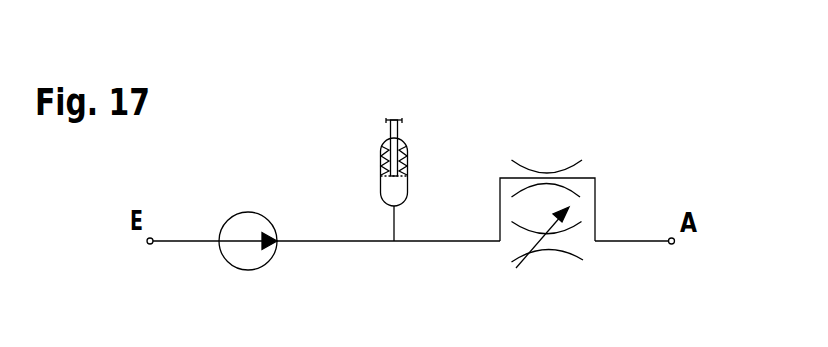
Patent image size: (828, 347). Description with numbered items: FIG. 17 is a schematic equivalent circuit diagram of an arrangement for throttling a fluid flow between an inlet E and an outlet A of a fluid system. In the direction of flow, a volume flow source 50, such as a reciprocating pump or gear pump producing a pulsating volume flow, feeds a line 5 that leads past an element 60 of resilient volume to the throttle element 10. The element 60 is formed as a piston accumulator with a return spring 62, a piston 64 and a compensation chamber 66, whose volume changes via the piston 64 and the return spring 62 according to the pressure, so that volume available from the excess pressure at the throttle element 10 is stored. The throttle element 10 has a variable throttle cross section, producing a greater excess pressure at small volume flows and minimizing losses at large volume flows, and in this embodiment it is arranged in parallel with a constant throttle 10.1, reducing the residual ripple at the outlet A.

The volume flow source 50 is at (227, 220).
The line 5 is at (296, 239).
The element of resilient volume 60 is at (336, 160).
The return spring 62 is at (408, 152).
The piston 64 is at (406, 172).
The compensation chamber 66 is at (397, 193).
The throttle element 10 is at (584, 206).
The constant throttle 10.1 is at (530, 170).